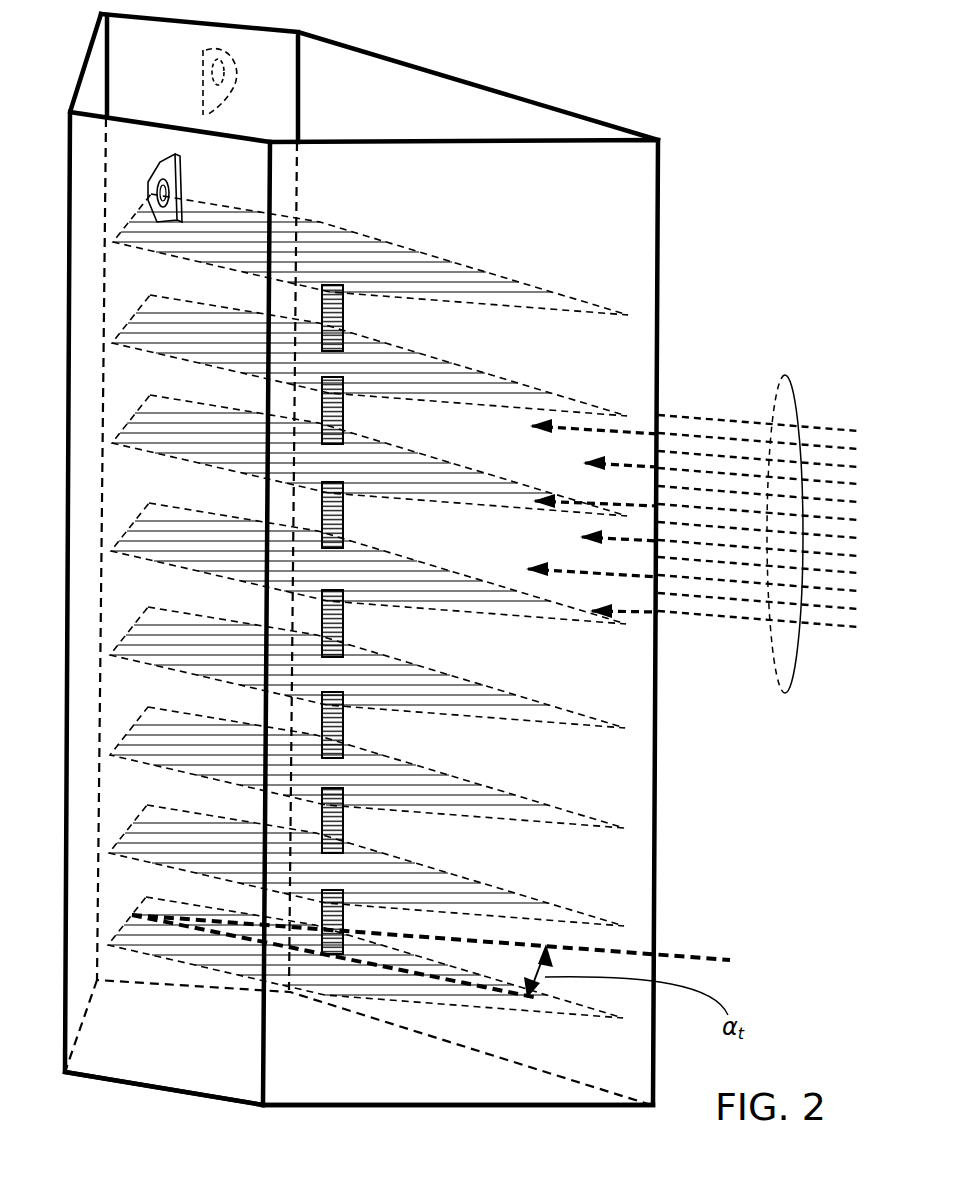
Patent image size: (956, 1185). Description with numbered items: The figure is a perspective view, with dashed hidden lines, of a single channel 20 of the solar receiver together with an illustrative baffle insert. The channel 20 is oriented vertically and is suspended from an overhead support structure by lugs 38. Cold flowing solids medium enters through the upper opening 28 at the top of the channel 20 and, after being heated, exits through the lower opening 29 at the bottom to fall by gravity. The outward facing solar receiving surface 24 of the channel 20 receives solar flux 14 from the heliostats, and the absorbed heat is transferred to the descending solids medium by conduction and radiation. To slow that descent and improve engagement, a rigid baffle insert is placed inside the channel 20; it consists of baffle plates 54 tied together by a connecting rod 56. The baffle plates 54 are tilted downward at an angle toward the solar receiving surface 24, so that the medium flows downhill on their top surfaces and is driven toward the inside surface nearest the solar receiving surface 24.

The solar flux 14 is at (785, 375).
The channel 20 is at (145, 580).
The solar receiving surface 24 is at (598, 765).
The upper opening 28 is at (252, 112).
The lower opening 29 is at (197, 1048).
The lug 38 is at (200, 50).
The baffle plate 54 is at (448, 470).
The connecting rod 56 is at (345, 620).